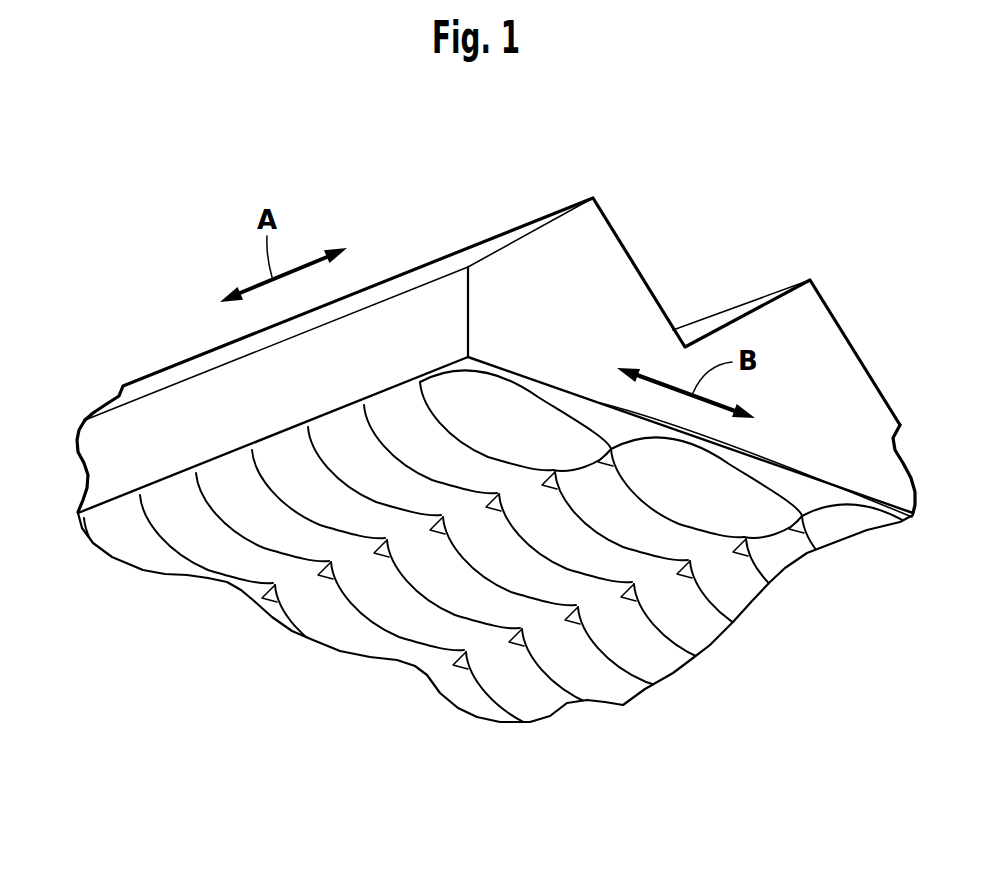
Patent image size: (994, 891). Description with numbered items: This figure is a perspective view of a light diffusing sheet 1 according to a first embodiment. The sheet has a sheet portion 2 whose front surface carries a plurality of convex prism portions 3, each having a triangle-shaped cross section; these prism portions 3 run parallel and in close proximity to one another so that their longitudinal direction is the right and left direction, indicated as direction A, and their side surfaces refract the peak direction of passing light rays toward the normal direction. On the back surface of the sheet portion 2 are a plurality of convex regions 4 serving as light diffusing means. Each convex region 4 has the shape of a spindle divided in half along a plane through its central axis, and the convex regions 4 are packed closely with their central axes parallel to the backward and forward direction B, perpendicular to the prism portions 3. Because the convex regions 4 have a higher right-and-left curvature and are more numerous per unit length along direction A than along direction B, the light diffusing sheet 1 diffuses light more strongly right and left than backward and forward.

The light diffusing sheet 1 is at (178, 328).
The sheet portion 2 is at (116, 454).
The prism portions 3 is at (598, 228).
The convex regions 4 is at (548, 577).